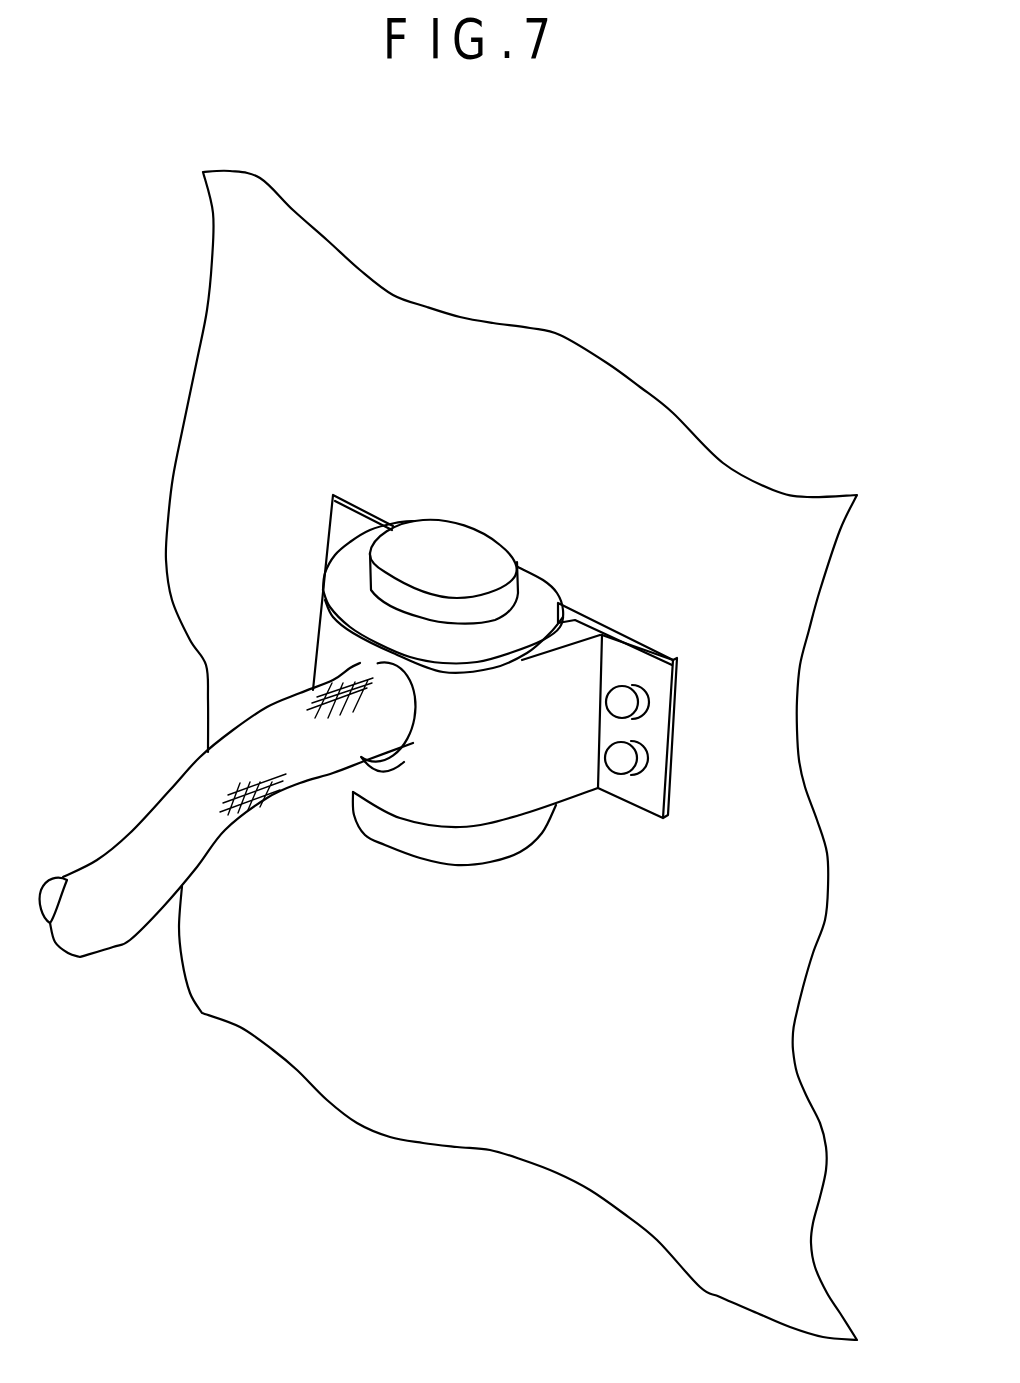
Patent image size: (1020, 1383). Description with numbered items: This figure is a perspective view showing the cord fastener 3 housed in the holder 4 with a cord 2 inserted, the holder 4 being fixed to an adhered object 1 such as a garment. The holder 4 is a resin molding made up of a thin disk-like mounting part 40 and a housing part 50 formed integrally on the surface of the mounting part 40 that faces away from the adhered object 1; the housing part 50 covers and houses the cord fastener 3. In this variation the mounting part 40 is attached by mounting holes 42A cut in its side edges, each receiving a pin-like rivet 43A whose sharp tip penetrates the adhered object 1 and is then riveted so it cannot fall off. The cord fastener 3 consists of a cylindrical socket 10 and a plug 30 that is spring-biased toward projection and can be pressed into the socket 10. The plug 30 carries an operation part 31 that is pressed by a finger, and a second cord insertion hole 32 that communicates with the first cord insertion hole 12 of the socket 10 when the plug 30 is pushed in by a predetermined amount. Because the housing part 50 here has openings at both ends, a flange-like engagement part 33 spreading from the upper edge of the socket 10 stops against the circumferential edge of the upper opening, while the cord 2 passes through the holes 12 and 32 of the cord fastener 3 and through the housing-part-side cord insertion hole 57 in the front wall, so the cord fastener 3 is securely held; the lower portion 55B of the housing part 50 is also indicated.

The adhered object 1 is at (766, 511).
The cord 2 is at (98, 910).
The cord fastener 3 is at (386, 478).
The holder 4 is at (613, 836).
The socket 10 is at (477, 857).
The first cord insertion hole 12 is at (400, 765).
The plug 30 is at (458, 521).
The operation part 31 is at (473, 558).
The second cord insertion hole 32 is at (410, 745).
The engagement part 33 is at (535, 598).
The mounting part 40 is at (648, 663).
The mounting hole 42A is at (640, 738).
The rivet 43A is at (623, 761).
The housing part 50 is at (587, 663).
The lower wall portion 55B is at (567, 800).
The housing-part-side cord insertion hole 57 is at (357, 795).